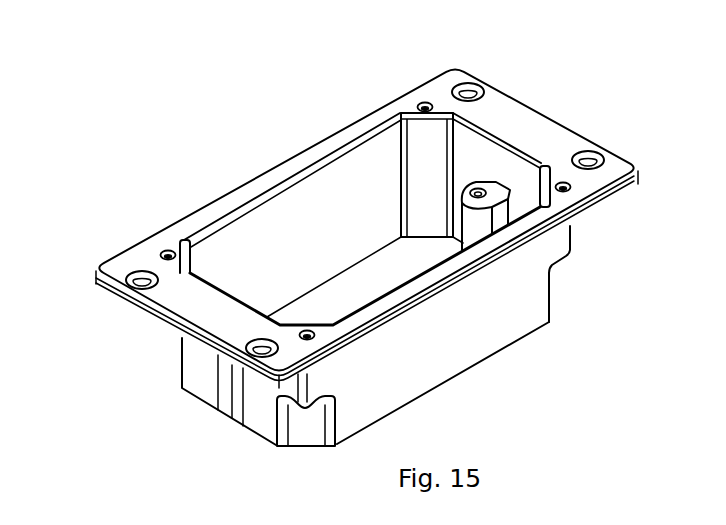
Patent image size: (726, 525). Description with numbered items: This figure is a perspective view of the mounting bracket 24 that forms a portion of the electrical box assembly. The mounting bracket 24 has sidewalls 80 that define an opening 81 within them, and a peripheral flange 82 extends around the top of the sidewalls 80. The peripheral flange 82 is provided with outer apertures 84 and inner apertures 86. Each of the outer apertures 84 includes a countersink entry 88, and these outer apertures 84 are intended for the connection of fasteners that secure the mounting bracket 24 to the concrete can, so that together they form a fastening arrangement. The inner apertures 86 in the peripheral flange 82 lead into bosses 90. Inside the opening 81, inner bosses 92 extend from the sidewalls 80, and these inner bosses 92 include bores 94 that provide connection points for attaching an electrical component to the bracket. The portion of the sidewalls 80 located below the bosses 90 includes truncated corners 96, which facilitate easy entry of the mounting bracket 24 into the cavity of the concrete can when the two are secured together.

The mounting bracket 24 is at (116, 99).
The sidewalls 80 is at (458, 360).
The opening 81 is at (352, 197).
The peripheral flange 82 is at (551, 120).
The outer apertures 84 is at (593, 172).
The inner apertures 86 is at (569, 188).
The countersink entry 88 is at (595, 153).
The bosses 90 is at (307, 388).
The inner bosses 92 is at (473, 227).
The bores 94 is at (492, 186).
The truncated corners 96 is at (305, 428).